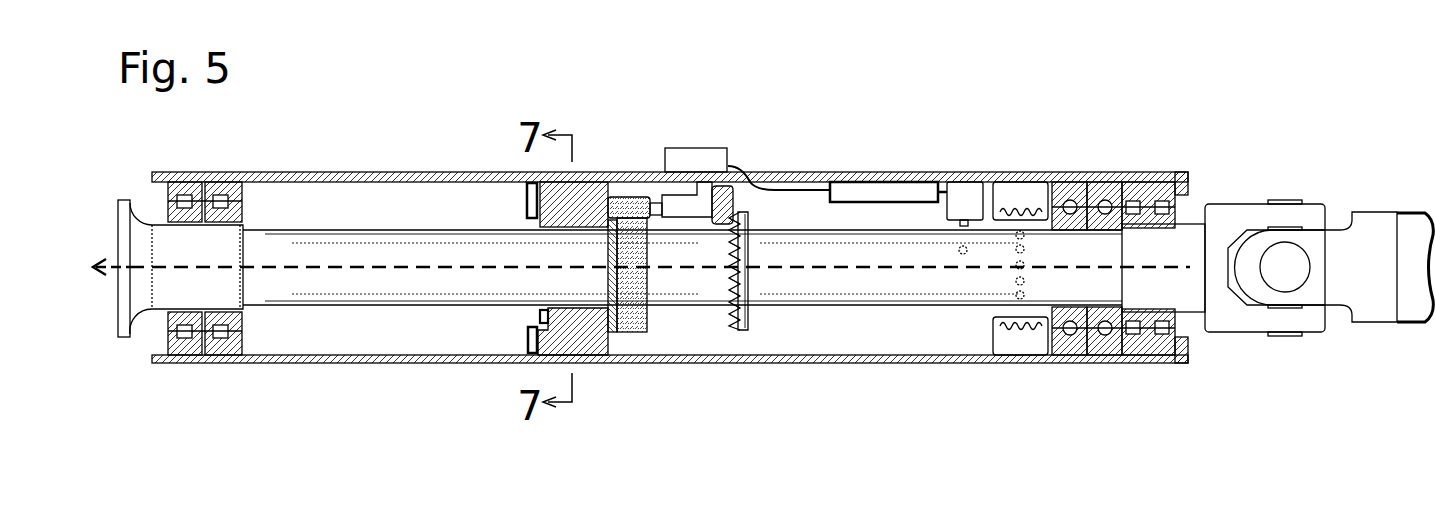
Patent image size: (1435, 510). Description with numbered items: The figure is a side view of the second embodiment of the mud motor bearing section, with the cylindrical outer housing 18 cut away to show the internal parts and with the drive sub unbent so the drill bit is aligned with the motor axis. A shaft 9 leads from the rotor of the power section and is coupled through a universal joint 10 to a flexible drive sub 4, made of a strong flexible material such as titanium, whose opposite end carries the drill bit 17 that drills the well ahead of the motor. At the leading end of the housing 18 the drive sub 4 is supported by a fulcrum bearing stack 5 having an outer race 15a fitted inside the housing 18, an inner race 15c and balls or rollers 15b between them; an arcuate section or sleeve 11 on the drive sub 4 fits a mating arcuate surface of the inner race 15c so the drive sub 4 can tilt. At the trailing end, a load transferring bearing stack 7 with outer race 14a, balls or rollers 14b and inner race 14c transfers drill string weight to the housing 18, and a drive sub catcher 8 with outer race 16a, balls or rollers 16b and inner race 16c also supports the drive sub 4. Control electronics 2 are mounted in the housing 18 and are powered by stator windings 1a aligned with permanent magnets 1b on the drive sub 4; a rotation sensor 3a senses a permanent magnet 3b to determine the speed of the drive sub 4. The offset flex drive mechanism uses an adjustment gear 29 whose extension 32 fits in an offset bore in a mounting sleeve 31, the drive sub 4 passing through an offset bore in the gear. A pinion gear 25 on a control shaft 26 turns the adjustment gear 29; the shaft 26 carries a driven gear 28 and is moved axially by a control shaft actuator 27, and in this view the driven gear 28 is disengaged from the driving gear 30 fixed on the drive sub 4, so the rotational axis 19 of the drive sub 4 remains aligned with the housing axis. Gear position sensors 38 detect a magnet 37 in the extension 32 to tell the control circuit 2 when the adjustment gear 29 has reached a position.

The stator windings 1a is at (1018, 195).
The permanent magnets 1b is at (1018, 283).
The control electronics 2 is at (840, 188).
The rotation sensor 3a is at (963, 190).
The permanent magnet 3b is at (963, 248).
The flexible drive sub 4 is at (398, 248).
The fulcrum bearing stack 5 is at (250, 271).
The load transferring bearing stack 7 is at (1058, 190).
The drive sub catcher 8 is at (1144, 271).
The shaft 9 is at (1413, 218).
The universal joint 10 is at (1293, 208).
The arcuate section or sleeve 11 is at (157, 308).
The outer race 14a is at (1123, 185).
The balls or rollers 14b is at (1103, 203).
The inner race 14c is at (1087, 208).
The outer race 15a is at (198, 192).
The balls or rollers 15b is at (223, 195).
The inner race 15c is at (243, 208).
The outer race 16a is at (1138, 340).
The balls or rollers 16b is at (1160, 340).
The inner race 16c is at (1173, 327).
The drill bit 17 is at (129, 198).
The cylindrical outer housing 18 is at (383, 176).
The rotational axis 19 is at (335, 267).
The pinion gear 25 is at (630, 205).
The shaft 26 is at (658, 207).
The control shaft actuator 27 is at (692, 162).
The driven gear 28 is at (722, 195).
The adjustment gear 29 is at (638, 326).
The driving gear 30 is at (740, 330).
The mounting sleeve 31 is at (578, 345).
The extension 32 is at (608, 328).
The magnet 37 is at (540, 316).
The gear position sensors 38 is at (531, 200).